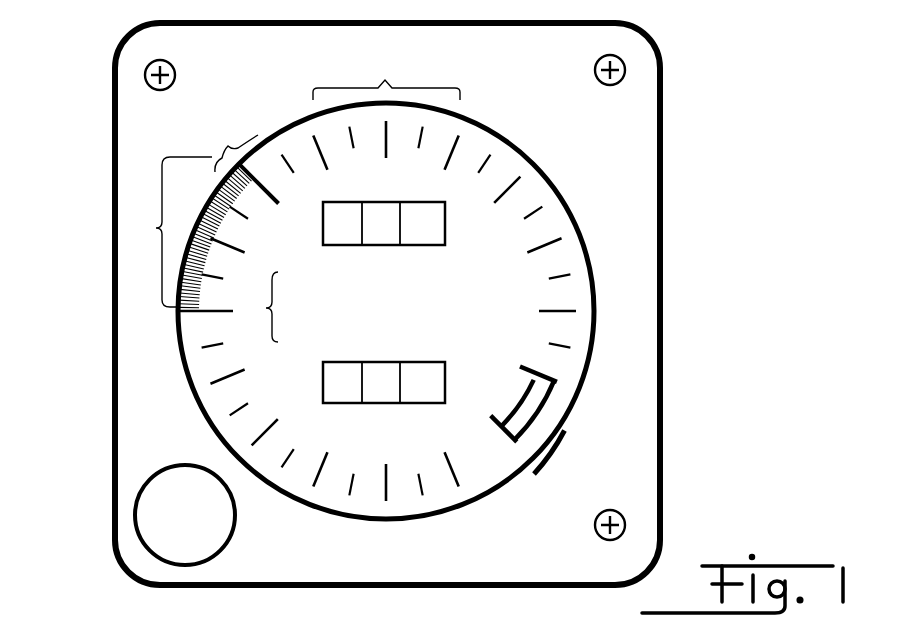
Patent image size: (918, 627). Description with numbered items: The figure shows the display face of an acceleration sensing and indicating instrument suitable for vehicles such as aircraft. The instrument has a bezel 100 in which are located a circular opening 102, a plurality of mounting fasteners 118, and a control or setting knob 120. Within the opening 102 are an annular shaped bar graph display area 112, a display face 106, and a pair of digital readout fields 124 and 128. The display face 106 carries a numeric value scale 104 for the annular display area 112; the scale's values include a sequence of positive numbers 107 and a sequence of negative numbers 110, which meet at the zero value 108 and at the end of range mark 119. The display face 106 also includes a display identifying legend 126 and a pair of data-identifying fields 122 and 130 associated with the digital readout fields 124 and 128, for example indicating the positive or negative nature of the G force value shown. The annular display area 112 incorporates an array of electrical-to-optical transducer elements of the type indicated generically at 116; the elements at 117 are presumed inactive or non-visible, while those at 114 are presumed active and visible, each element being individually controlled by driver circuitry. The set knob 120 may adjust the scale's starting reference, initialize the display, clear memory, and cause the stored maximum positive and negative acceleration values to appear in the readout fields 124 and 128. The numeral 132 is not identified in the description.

The bezel 100 is at (660, 232).
The circular opening 102 is at (560, 190).
The numeric value scale 104 is at (371, 114).
The display face 106 is at (506, 151).
The sequence of positive numbers 107 is at (627, 293).
The zero value 108 is at (184, 399).
The sequence of negative numbers 110 is at (344, 482).
The annular shaped bar graph display area 112 is at (248, 131).
The transducer elements in active state 114 is at (157, 252).
The electrical-to-optical transducer elements 116 is at (210, 145).
The transducer elements in inactive state 117 is at (577, 370).
The mounting fasteners 118 is at (146, 74).
The end of range mark 119 is at (566, 417).
The control or setting knob 120 is at (136, 540).
The data-identifying field 122 is at (432, 258).
The digital readout field 124 is at (448, 210).
The display identifying legend 126 is at (266, 308).
The digital readout field 128 is at (447, 385).
The data-identifying field 130 is at (430, 418).
The maximum legend 132 is at (332, 420).